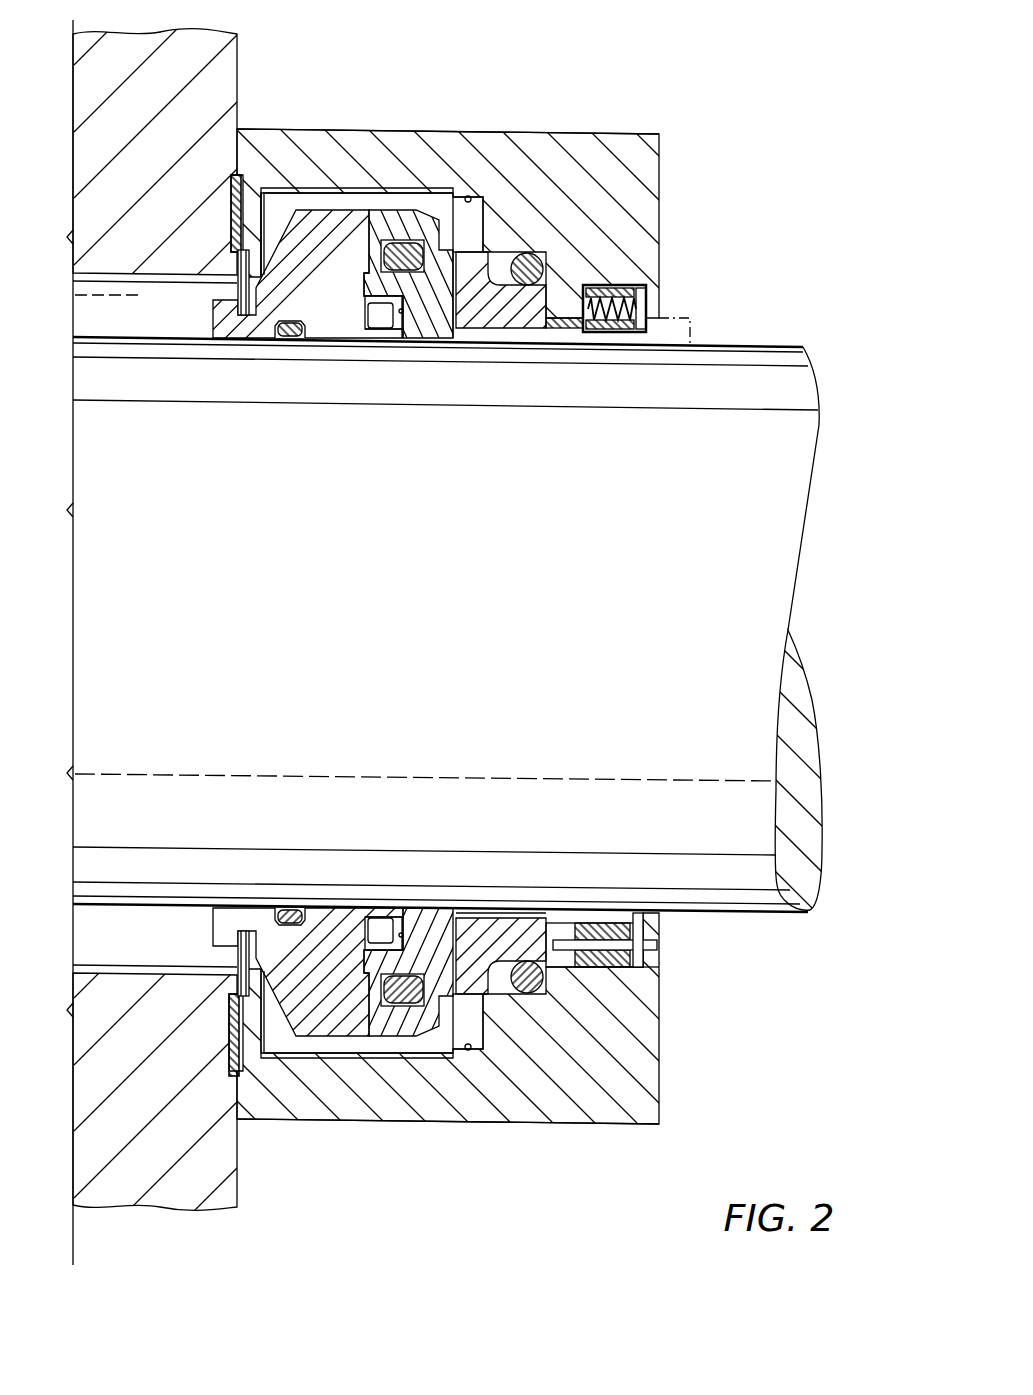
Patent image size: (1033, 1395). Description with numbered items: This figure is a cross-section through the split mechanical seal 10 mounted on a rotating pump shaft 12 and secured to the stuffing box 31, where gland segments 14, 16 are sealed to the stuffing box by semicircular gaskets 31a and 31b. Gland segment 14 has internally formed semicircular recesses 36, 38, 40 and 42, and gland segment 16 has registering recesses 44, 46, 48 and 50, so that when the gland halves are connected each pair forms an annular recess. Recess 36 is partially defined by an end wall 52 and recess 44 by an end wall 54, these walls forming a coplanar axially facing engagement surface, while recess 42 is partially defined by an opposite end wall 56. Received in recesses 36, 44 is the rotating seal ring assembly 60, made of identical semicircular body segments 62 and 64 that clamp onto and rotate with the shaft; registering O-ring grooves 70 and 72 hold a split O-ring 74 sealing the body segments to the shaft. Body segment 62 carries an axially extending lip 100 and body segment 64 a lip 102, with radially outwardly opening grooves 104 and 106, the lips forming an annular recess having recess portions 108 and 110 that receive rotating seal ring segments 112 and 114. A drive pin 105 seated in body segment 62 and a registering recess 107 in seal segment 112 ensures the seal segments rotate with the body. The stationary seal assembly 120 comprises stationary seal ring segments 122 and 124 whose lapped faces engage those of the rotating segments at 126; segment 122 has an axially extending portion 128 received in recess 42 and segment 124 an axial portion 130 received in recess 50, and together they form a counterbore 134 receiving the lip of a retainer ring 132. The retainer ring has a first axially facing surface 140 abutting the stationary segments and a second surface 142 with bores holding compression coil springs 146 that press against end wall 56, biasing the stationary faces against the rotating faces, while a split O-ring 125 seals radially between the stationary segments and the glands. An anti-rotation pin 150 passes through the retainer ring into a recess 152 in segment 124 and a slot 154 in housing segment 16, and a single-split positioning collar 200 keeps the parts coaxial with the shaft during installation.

The mechanical seal 10 is at (537, 55).
The rotating shaft 12 is at (445, 592).
The gland segment 14 is at (653, 168).
The gland segment 16 is at (653, 1040).
The stuffing box 31 is at (78, 112).
The semicircular gasket 31a is at (230, 207).
The semicircular gasket 31b is at (230, 1037).
The recess 36 is at (330, 187).
The recess 38 is at (475, 195).
The recess 40 is at (512, 247).
The recess 42 is at (598, 285).
The recess 44 is at (335, 1058).
The recess 46 is at (468, 1050).
The recess 48 is at (520, 1000).
The recess 50 is at (650, 1000).
The end wall 52 is at (272, 187).
The end wall 54 is at (290, 1085).
The end wall 56 is at (646, 292).
The rotating seal ring assembly 60 is at (305, 165).
The first body segment 62 is at (245, 320).
The second body segment 64 is at (340, 920).
The O-ring groove 70 is at (290, 335).
The O-ring groove 72 is at (293, 910).
The split O-ring 74 is at (300, 335).
The axially extending lip 100 is at (430, 220).
The axially extending lip 102 is at (418, 1065).
The groove 104 is at (397, 243).
The drive pin 105 is at (385, 330).
The groove 106 is at (398, 1005).
The recess 107 is at (425, 330).
The recess portion 108 is at (370, 267).
The recess portion 110 is at (365, 1045).
The rotating seal ring segment 112 is at (462, 326).
The rotating seal ring segment 114 is at (440, 937).
The stationary seal assembly 120 is at (624, 366).
The stationary seal ring segment 122 is at (513, 338).
The stationary seal ring segment 124 is at (527, 907).
The split O-ring 125 is at (600, 1122).
The seal faces 126 is at (487, 927).
The axially extending portion 128 is at (575, 332).
The axially extending portion 130 is at (537, 937).
The retainer ring 132 is at (628, 298).
The counterbore 134 is at (548, 330).
The first axially facing surface 140 is at (570, 293).
The second axially facing surface 142 is at (630, 933).
The compression coil springs 146 is at (645, 328).
The anti-rotation pin 150 is at (640, 960).
The recess 152 is at (570, 927).
The slot 154 is at (650, 937).
The positioning collar 200 is at (693, 328).